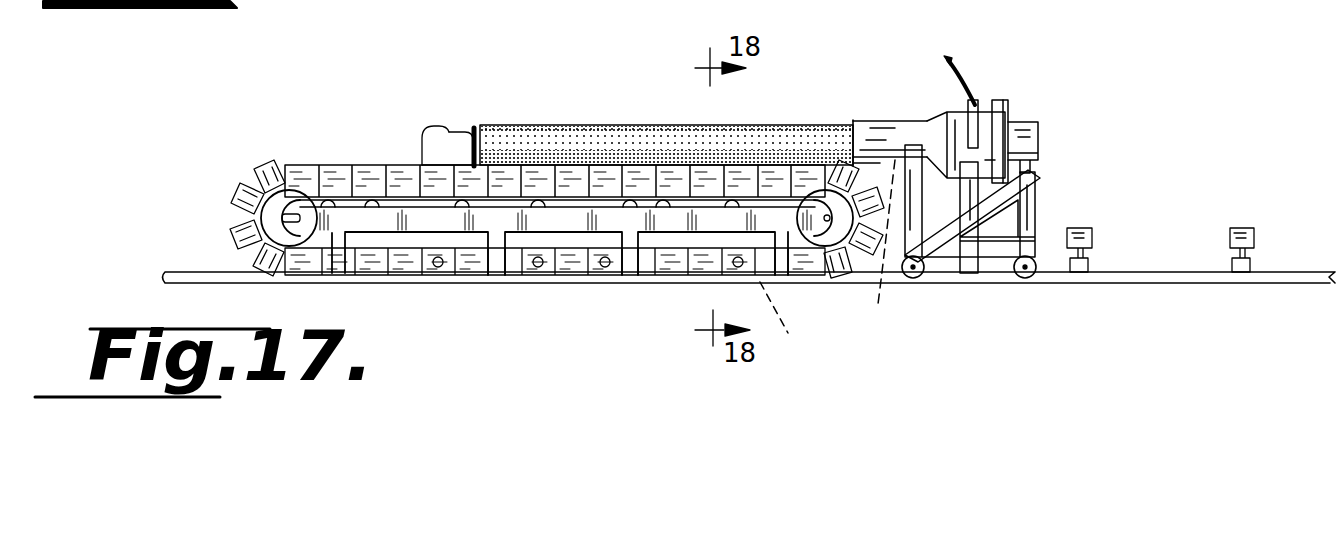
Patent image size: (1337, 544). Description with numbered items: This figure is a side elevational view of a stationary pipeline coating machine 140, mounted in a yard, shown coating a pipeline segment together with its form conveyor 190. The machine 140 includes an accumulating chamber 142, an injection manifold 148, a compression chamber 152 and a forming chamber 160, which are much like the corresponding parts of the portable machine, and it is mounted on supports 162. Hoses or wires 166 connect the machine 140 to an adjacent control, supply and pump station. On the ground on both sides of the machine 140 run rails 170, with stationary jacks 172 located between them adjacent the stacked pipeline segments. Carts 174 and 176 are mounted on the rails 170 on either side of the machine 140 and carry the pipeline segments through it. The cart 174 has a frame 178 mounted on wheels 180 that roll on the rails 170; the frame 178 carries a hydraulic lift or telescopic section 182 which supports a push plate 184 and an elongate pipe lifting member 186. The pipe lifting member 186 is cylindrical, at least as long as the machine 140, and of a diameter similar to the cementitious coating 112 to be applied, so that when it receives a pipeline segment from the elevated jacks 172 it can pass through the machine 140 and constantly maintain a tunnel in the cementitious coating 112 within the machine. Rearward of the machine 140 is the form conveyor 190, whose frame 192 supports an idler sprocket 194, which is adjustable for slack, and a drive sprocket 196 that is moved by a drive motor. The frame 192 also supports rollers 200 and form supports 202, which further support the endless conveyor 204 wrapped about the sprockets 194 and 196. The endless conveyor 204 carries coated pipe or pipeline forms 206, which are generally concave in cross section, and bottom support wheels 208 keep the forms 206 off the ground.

The cementitious coating 112 is at (519, 125).
The pipeline coating machine 140 is at (893, 120).
The accumulating chamber 142 is at (1005, 100).
The injection manifold 148 is at (976, 100).
The compression chamber 152 is at (930, 118).
The forming chamber 160 is at (860, 122).
The supports 162 is at (893, 270).
The hoses or wires 166 is at (955, 66).
The rails 170 is at (1165, 273).
The stationary jacks 172 is at (1240, 268).
The cart 174 is at (1023, 128).
The cart 176 is at (445, 142).
The frame 178 is at (1030, 233).
The wheels 180 is at (1020, 278).
The hydraulic lift or telescopic section 182 is at (1035, 175).
The push plate 184 is at (1007, 105).
The pipe lifting member 186 is at (462, 128).
The form conveyor 190 is at (305, 168).
The frame 192 is at (628, 240).
The idler sprocket 194 is at (255, 203).
The drive sprocket 196 is at (822, 245).
The rollers 200 is at (622, 125).
The form supports 202 is at (672, 125).
The endless conveyor 204 is at (334, 195).
The pipeline forms 206 is at (262, 172).
The bottom support wheels 208 is at (782, 317).